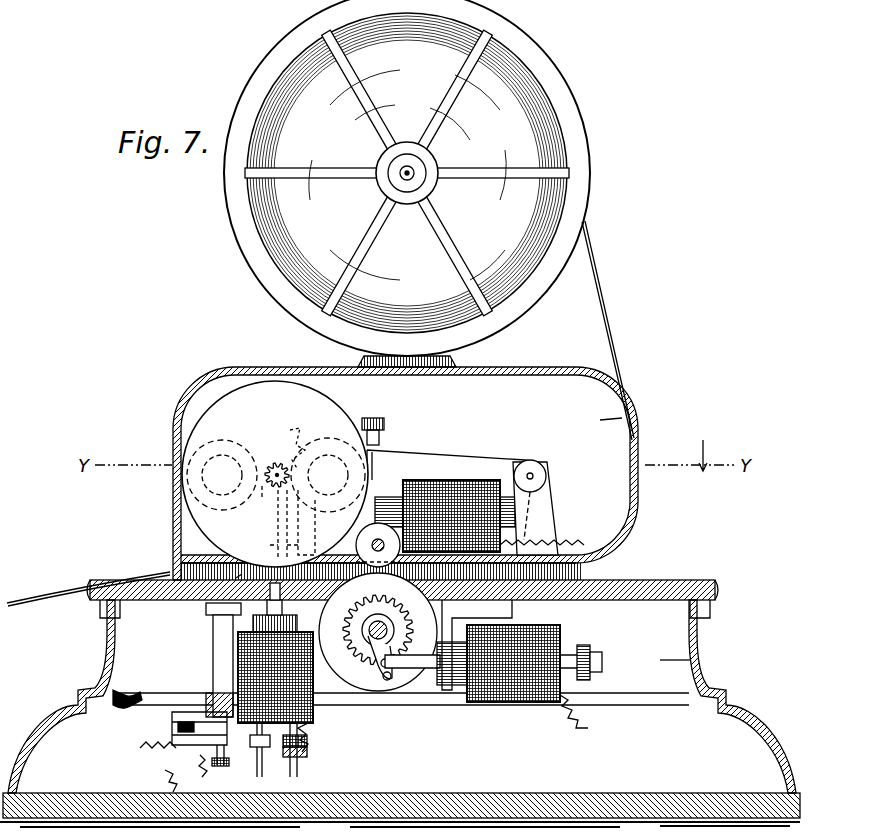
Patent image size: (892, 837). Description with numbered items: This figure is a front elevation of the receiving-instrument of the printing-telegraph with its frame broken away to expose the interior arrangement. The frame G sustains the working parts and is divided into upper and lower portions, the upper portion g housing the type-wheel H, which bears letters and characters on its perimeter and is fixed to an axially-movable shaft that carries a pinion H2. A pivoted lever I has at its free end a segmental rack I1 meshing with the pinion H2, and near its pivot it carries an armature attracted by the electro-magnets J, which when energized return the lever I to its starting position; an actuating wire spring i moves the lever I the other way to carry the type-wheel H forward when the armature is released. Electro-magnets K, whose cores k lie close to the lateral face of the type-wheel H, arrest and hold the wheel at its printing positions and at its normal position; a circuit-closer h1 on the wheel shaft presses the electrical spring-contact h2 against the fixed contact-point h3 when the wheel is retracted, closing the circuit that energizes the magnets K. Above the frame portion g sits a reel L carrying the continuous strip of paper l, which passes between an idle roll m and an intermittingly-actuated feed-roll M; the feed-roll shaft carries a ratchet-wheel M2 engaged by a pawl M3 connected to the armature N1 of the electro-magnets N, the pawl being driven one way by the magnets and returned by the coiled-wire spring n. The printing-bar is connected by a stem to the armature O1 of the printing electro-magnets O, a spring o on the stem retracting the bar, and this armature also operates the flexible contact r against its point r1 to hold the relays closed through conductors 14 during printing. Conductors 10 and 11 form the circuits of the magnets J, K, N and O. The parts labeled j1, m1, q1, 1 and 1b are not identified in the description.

The reel L is at (407, 183).
The continuous strip of paper l is at (605, 320).
The frame G is at (213, 390).
The upper portion of the frame g is at (597, 426).
The type-wheel H is at (286, 474).
The pinion H2 is at (283, 449).
The electro-magnets K is at (276, 477).
The cores k is at (275, 475).
The circuit-closer h1 is at (251, 497).
The electrical spring-contact h2 is at (277, 525).
The fixed contact-point h3 is at (311, 522).
The pivoted lever I is at (451, 465).
The segmental rack I1 is at (362, 425).
The actuating wire spring i is at (389, 503).
The electro-magnets J is at (459, 516).
The pulley j1 is at (540, 528).
The conductor 10 is at (544, 535).
The idle roll m is at (378, 544).
The feed-roll M is at (378, 630).
The ratchet-wheel M2 is at (378, 630).
The ratchet shaft m1 is at (388, 632).
The pawl M3 is at (386, 664).
The electro-magnets N is at (507, 651).
The coiled-wire spring n is at (574, 655).
The armature N1 is at (602, 655).
The connecting rod q1 is at (675, 651).
The conductor 11 is at (402, 722).
The electro-magnets O is at (275, 653).
The spring o is at (255, 760).
The armature O1 is at (300, 751).
The flexible contact r is at (240, 738).
The point r1 is at (210, 758).
The conductor 14 is at (158, 767).
The lever 1 is at (155, 576).
The pin 1b is at (243, 578).